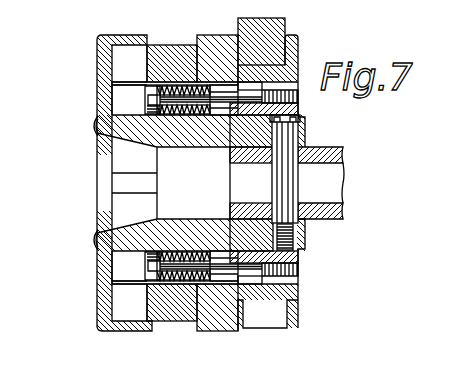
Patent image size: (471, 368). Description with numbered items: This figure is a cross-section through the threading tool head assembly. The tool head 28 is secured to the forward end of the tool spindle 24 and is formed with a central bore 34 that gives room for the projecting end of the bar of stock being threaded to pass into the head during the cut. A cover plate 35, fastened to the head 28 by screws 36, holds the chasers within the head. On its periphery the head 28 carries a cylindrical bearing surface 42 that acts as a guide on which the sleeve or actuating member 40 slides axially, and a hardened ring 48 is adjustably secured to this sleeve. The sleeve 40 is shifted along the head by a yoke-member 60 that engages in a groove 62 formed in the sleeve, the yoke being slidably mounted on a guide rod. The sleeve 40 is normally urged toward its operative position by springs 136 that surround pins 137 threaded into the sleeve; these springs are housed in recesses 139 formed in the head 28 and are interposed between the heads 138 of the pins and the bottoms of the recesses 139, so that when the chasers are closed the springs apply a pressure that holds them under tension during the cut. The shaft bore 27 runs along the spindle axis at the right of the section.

The tool spindle 24 is at (321, 145).
The shaft bore 27 is at (293, 184).
The tool head 28 is at (171, 226).
The central bore 34 is at (194, 180).
The cover plate 35 is at (97, 50).
The screws 36 is at (95, 125).
The actuating member 40 is at (297, 49).
The cylindrical bearing surface 42 is at (147, 1).
The hardened ring 48 is at (173, 55).
The yoke-member 60 is at (282, 20).
The groove 62 is at (270, 303).
The springs 136 is at (188, 113).
The pins 137 is at (240, 97).
The heads 138 is at (112, 90).
The recesses 139 is at (128, 272).